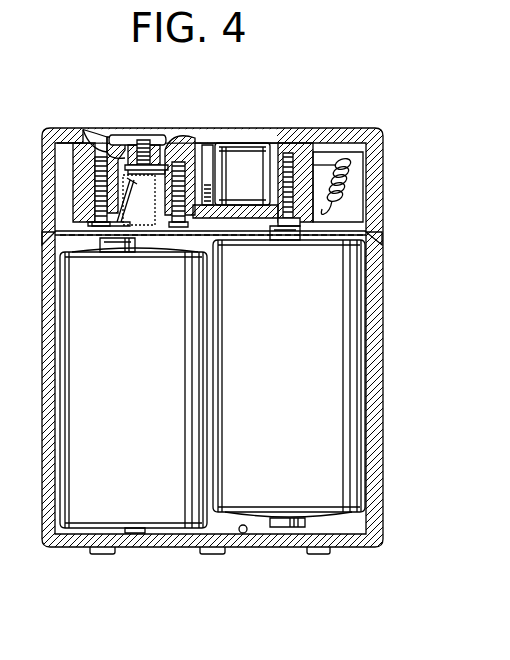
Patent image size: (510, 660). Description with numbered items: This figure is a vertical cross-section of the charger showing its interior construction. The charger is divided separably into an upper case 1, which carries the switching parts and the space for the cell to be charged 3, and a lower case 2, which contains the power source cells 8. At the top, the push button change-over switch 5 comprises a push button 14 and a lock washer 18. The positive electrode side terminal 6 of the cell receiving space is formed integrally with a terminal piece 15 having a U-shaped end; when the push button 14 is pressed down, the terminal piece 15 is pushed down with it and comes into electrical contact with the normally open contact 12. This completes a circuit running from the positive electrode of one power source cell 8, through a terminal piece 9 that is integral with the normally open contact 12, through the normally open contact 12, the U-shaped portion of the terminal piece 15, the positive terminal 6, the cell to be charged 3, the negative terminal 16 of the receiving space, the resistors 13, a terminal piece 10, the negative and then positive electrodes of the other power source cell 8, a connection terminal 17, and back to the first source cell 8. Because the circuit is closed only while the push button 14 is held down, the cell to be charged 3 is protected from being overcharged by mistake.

The upper case 1 is at (372, 130).
The lower case 2 is at (377, 373).
The cell to be charged 3 is at (233, 155).
The push button change-over switch 5 is at (112, 130).
The positive electrode side terminal 6 is at (168, 152).
The power source cell 8 is at (75, 467).
The terminal piece 9 is at (112, 227).
The terminal piece 10 is at (298, 228).
The normally open contact 12 is at (118, 170).
The resistor 13 is at (350, 186).
The push button 14 is at (135, 145).
The terminal piece 15 is at (160, 230).
The negative terminal 16 is at (278, 170).
The connection terminal 17 is at (243, 533).
The lock washer 18 is at (176, 158).